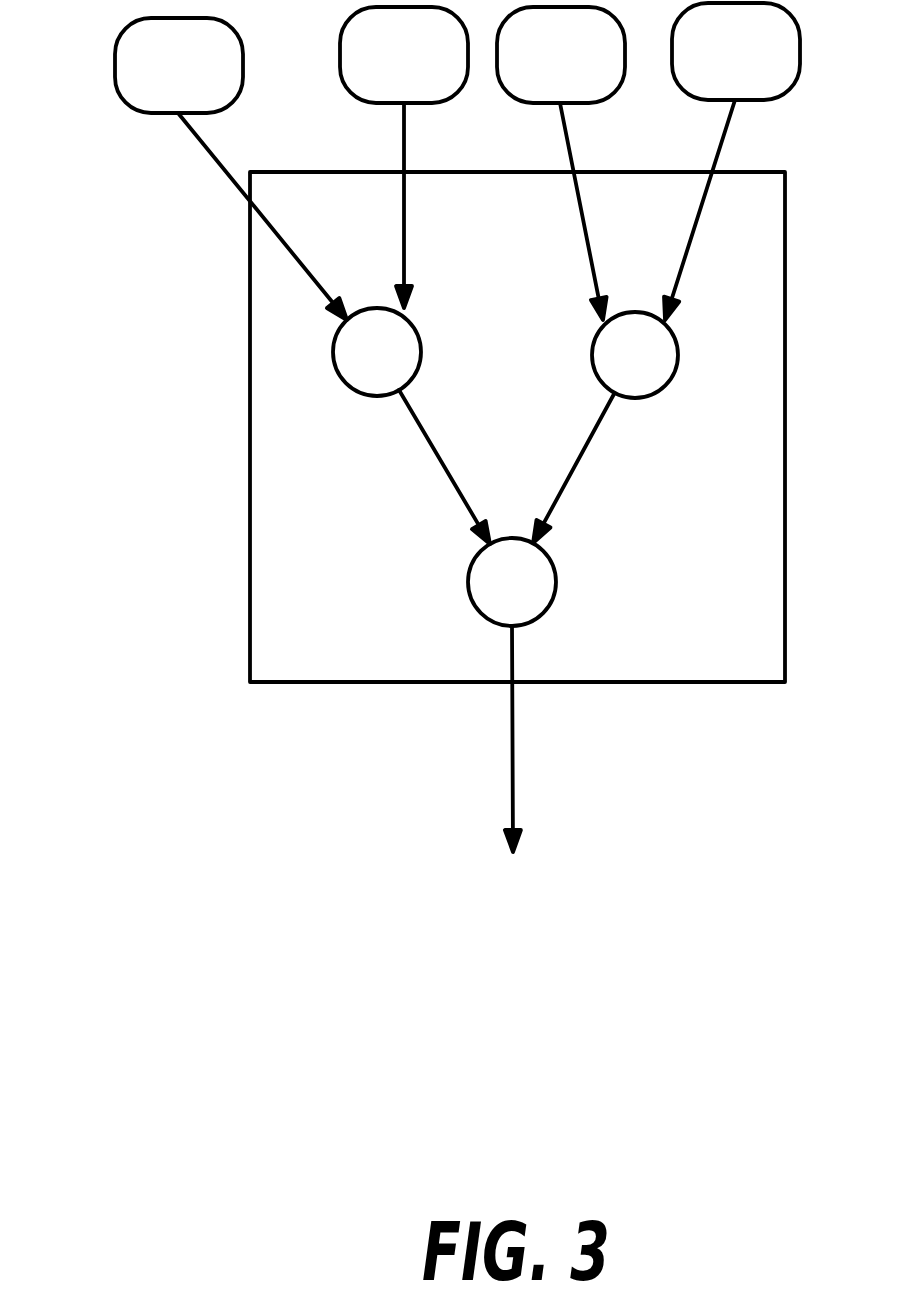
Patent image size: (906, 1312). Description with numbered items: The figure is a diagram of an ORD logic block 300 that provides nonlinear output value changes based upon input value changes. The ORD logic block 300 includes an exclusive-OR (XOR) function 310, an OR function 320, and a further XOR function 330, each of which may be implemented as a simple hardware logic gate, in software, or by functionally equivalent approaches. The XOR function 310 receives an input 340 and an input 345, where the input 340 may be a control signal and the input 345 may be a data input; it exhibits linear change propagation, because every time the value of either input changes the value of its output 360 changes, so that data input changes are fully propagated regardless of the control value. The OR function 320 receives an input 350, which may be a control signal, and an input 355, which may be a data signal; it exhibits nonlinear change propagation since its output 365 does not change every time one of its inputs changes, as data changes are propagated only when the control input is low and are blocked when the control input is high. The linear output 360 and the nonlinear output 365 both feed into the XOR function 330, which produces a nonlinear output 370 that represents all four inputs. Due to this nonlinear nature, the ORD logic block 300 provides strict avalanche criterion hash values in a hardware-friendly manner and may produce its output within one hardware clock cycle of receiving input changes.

The ORD logic block 300 is at (416, 427).
The exclusive-OR (XOR) function 310 is at (334, 352).
The OR function 320 is at (677, 357).
The XOR function 330 is at (468, 586).
The input 340 is at (156, 94).
The input 345 is at (381, 83).
The input 350 is at (538, 83).
The input 355 is at (713, 79).
The output 360 is at (382, 478).
The output 365 is at (653, 487).
The output 370 is at (612, 739).